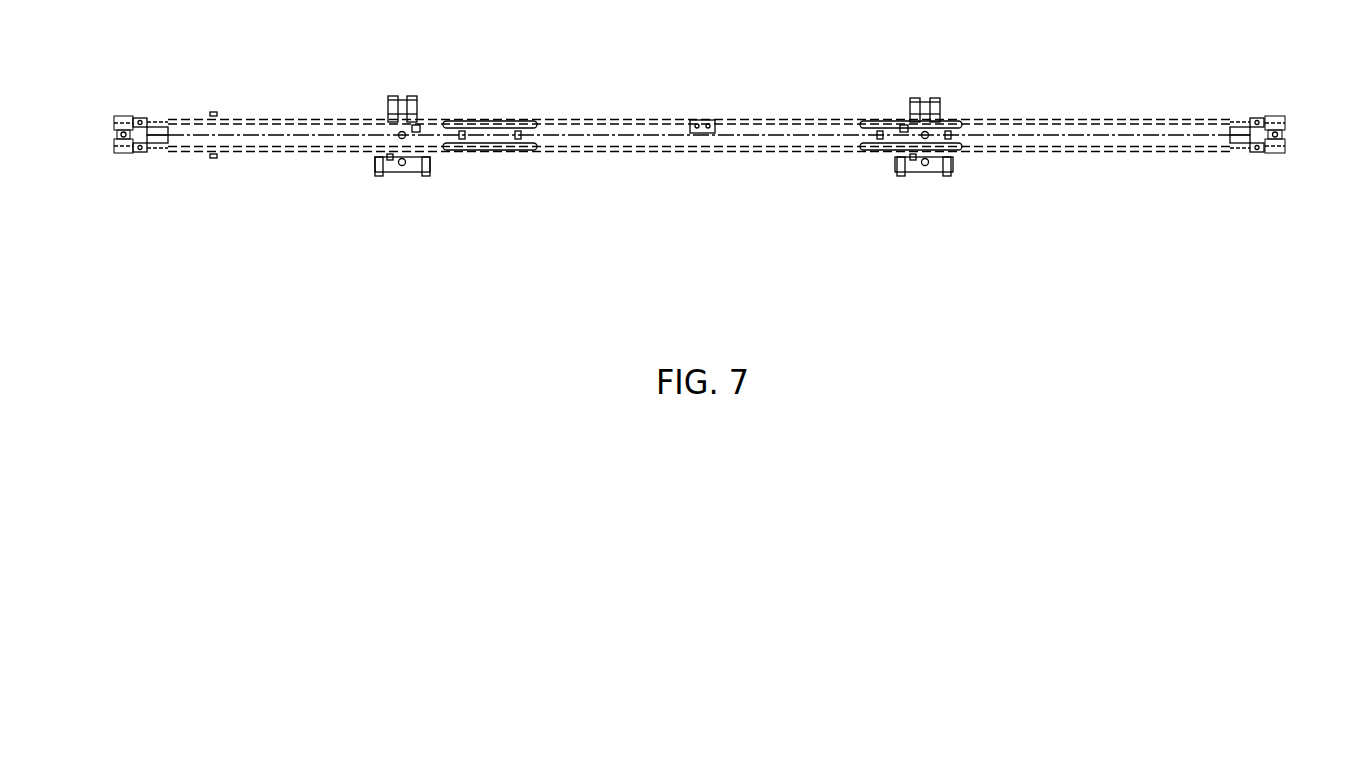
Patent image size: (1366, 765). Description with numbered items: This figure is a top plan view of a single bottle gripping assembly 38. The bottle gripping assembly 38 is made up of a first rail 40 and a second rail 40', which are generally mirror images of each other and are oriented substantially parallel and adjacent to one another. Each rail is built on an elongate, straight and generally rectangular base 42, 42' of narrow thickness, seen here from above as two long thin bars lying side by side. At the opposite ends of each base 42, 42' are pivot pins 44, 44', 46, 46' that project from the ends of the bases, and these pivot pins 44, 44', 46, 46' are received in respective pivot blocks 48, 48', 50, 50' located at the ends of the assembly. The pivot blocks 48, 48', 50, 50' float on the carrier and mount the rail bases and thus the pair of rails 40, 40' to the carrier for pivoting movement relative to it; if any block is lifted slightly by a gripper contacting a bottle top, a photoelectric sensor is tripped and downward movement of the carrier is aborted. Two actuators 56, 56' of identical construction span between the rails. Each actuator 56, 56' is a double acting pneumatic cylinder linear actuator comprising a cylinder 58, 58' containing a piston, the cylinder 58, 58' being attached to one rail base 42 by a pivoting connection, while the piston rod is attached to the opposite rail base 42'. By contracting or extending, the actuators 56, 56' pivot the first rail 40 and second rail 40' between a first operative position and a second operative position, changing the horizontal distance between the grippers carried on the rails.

The bottle gripping assembly 38 is at (609, 92).
The first rail 40 is at (699, 188).
The second rail 40' is at (699, 85).
The base 42 is at (266, 189).
The base 42' is at (265, 90).
The pivot pin 44 is at (169, 174).
The pivot pin 44' is at (169, 100).
The pivot pin 46 is at (1231, 178).
The pivot pin 46' is at (1230, 88).
The pivot block 48 is at (105, 171).
The pivot block 48' is at (104, 100).
The pivot block 50 is at (1297, 169).
The pivot block 50' is at (1300, 100).
The actuator 56 is at (383, 204).
The actuator 56' is at (904, 204).
The cylinder 58 is at (371, 147).
The cylinder 58' is at (890, 148).